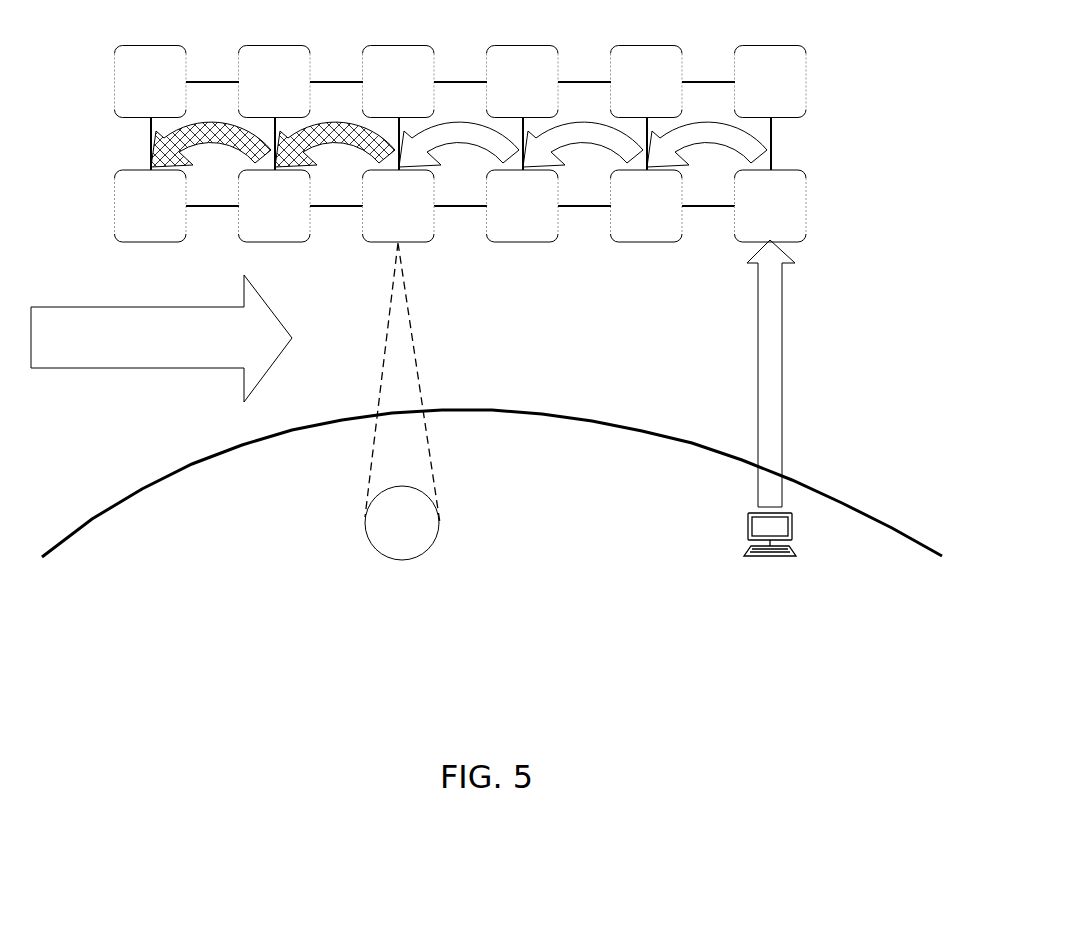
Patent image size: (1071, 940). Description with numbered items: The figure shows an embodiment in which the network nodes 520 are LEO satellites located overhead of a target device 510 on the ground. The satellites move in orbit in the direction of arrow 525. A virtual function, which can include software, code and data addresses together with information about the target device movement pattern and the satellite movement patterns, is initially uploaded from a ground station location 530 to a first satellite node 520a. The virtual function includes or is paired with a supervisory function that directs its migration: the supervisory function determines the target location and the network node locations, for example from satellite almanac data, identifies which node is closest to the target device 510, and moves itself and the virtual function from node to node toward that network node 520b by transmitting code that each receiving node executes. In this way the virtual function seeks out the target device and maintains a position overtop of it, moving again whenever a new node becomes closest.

The target device 510 is at (384, 535).
The network nodes 520 is at (531, 207).
The first satellite node 520a is at (736, 242).
The network node closest to the target device 520b is at (427, 244).
The arrow indicating direction of satellite movement 525 is at (161, 338).
The ground station location 530 is at (770, 416).